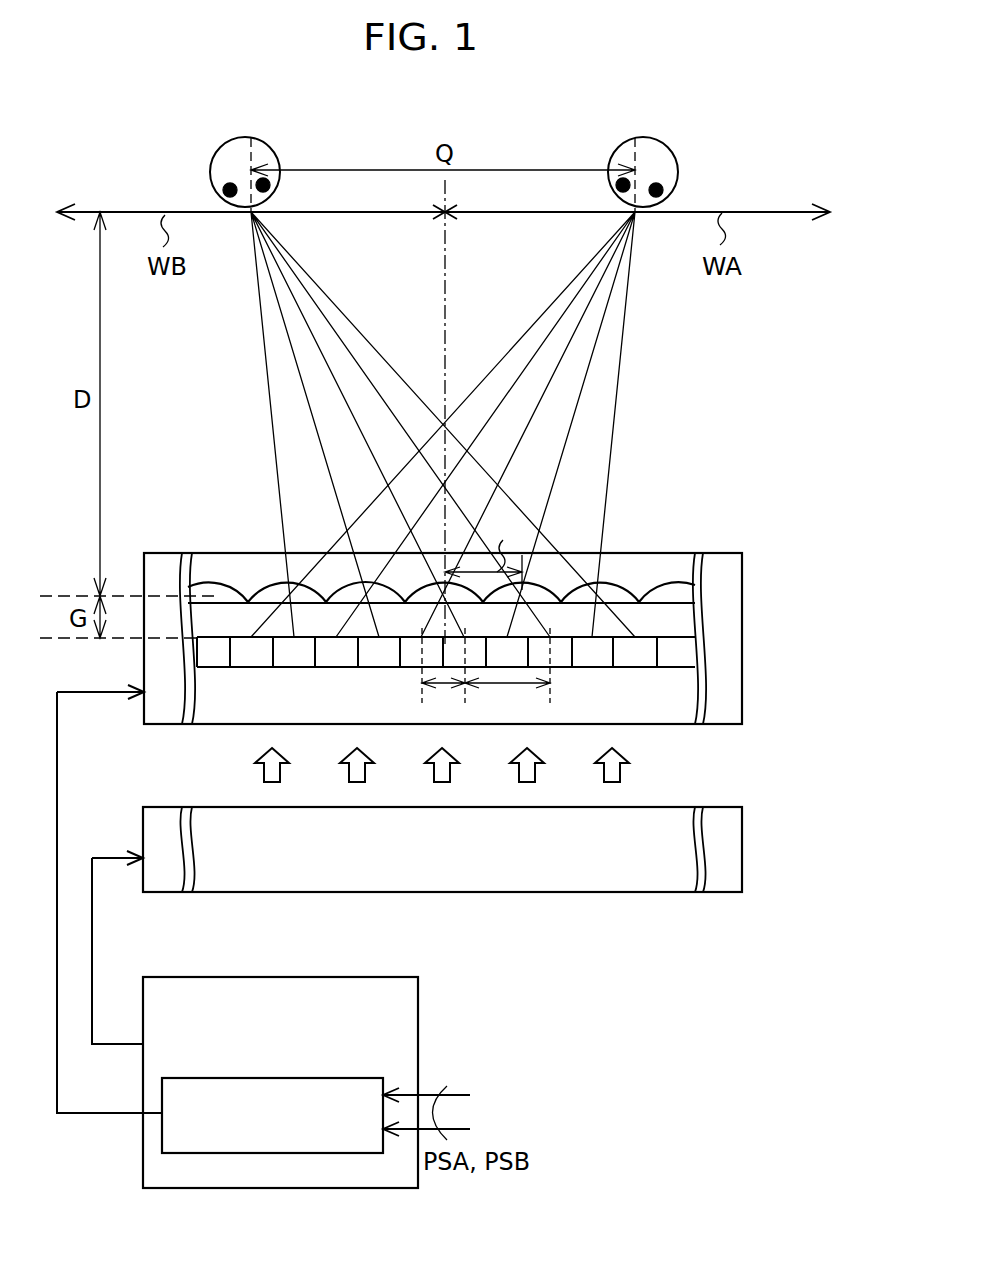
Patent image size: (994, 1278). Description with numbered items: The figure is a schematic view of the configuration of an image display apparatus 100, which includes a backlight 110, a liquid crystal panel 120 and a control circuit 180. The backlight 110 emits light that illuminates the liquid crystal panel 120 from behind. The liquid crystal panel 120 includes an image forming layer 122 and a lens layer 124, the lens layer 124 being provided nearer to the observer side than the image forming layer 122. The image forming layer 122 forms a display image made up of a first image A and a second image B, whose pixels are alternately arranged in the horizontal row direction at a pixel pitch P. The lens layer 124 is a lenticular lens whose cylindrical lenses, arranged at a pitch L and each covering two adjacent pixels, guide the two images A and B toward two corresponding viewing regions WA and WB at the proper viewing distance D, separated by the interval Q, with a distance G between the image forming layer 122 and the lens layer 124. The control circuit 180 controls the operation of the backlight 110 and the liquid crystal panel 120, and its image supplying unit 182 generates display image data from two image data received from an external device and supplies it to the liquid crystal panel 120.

The image display apparatus 100 is at (755, 459).
The backlight 110 is at (726, 807).
The liquid crystal panel 120 is at (726, 553).
The image forming layer 122 is at (745, 632).
The lens layer 124 is at (745, 577).
The control circuit 180 is at (366, 977).
The image supplying unit 182 is at (315, 1078).